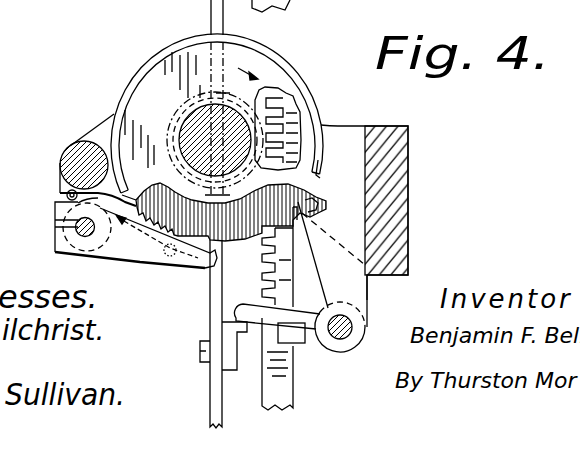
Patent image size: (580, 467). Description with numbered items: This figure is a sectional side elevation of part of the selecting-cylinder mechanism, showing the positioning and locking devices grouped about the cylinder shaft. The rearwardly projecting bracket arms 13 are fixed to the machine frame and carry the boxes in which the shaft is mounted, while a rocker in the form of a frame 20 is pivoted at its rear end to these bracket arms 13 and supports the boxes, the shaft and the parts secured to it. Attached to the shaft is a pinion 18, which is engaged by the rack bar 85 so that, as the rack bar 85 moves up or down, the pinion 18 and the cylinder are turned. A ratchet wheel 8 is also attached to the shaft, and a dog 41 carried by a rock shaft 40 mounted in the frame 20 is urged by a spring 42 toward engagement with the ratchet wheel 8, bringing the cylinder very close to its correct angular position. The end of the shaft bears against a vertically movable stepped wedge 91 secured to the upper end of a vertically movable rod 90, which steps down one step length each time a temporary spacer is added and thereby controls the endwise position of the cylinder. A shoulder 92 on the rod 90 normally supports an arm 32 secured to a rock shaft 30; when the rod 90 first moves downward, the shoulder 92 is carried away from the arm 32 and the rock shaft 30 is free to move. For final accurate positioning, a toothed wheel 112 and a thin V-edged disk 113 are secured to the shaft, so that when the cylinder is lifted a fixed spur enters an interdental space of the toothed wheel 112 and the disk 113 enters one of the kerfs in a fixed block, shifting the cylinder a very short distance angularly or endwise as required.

The bracket arms 13 is at (111, 114).
The stepped wedge 91 is at (190, 116).
The pinion 18 is at (255, 128).
The rack bar 85 is at (270, 162).
The thin disk 113 is at (320, 168).
The toothed wheel 112 is at (314, 206).
The frame 20 is at (60, 188).
The rock shaft 40 is at (80, 230).
The spring 42 is at (126, 240).
The dog 41 is at (154, 252).
The ratchet wheel 8 is at (231, 228).
The rod 90 is at (216, 295).
The arm 32 is at (256, 307).
The shoulder 92 is at (242, 346).
The rock shaft 30 is at (340, 338).